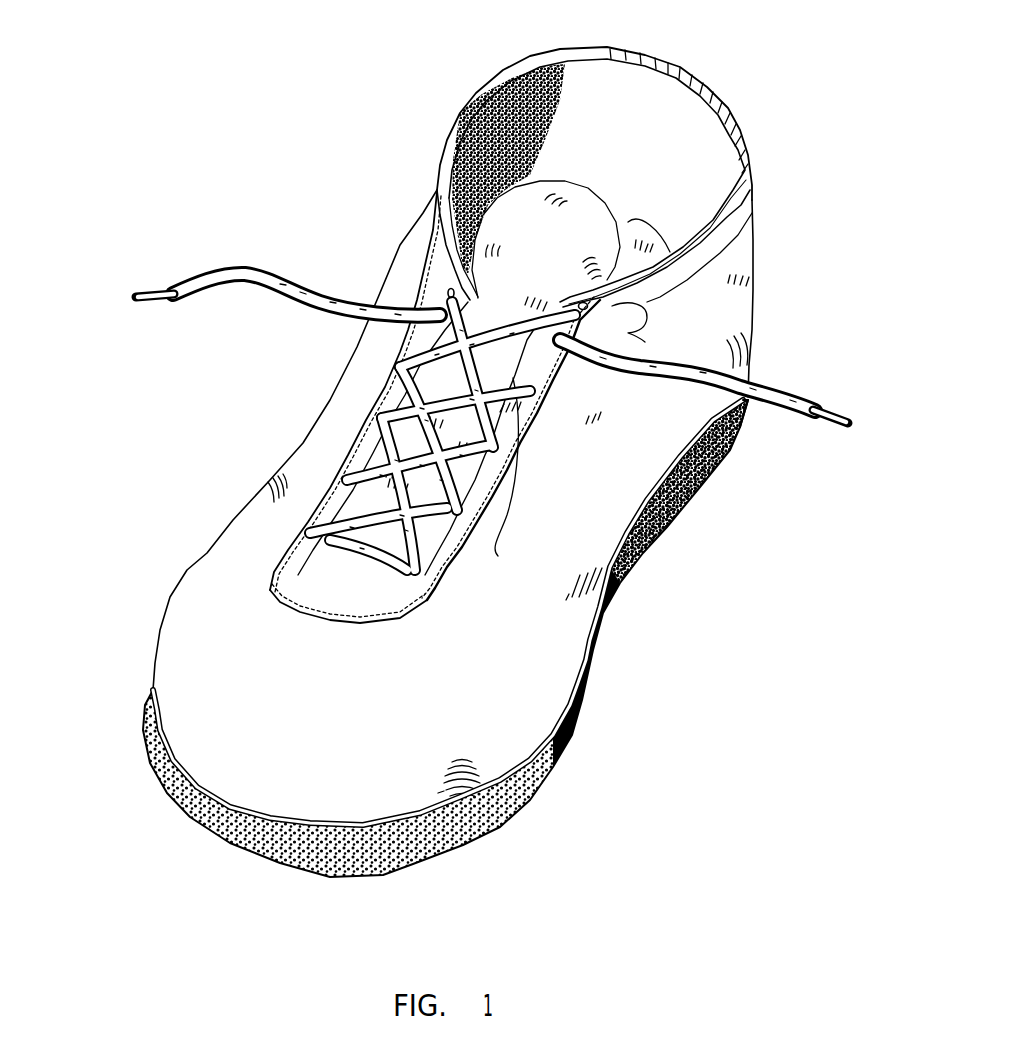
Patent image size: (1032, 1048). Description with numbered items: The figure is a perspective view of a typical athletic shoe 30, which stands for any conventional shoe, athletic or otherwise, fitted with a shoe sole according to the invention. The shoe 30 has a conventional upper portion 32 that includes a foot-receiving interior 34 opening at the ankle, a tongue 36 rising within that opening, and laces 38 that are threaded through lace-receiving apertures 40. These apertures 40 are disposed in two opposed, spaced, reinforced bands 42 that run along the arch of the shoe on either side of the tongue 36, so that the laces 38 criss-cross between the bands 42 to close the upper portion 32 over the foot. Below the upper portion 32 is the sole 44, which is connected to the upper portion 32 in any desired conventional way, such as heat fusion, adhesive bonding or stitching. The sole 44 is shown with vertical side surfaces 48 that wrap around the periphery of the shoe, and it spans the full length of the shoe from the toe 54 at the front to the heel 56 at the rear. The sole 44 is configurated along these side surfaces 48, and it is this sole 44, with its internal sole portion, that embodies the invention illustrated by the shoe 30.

The athletic shoe 30 is at (790, 247).
The upper portion 32 is at (728, 317).
The foot-receiving interior 34 is at (563, 90).
The tongue 36 is at (559, 260).
The laces 38 is at (280, 272).
The lace-receiving apertures 40 is at (395, 362).
The reinforced bands 42 is at (320, 500).
The sole 44 is at (438, 638).
The vertical side surfaces 48 is at (147, 687).
The toe 54 is at (233, 815).
The heel 56 is at (747, 417).